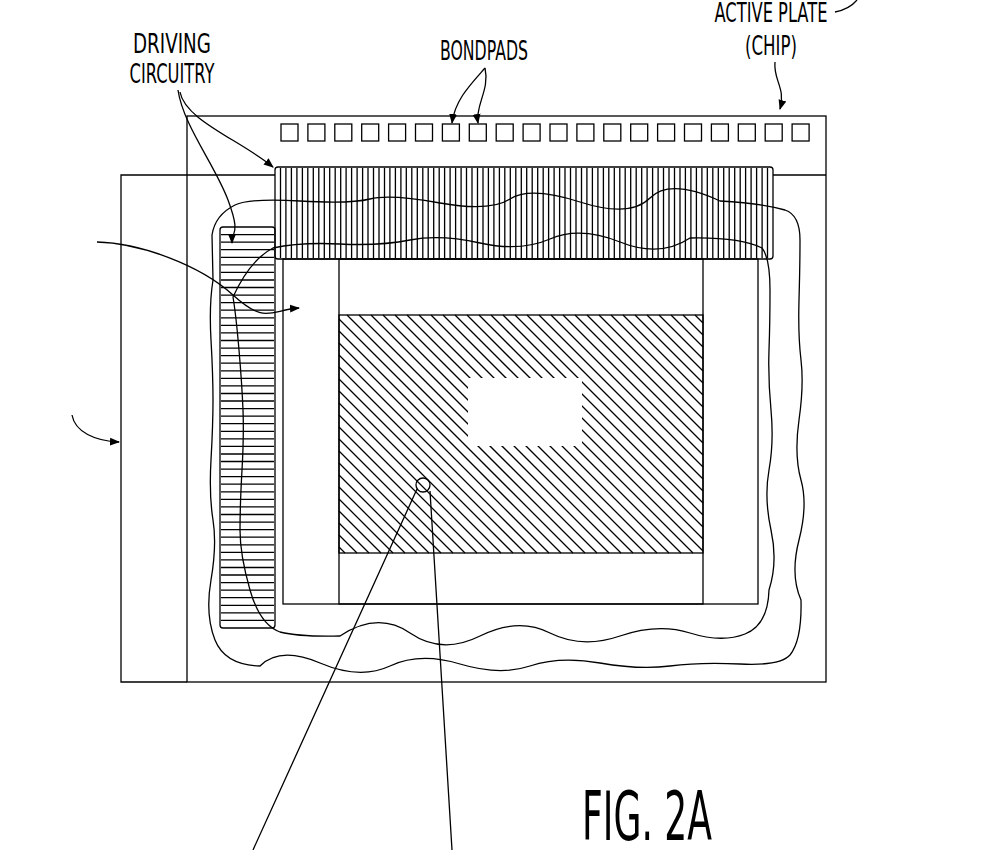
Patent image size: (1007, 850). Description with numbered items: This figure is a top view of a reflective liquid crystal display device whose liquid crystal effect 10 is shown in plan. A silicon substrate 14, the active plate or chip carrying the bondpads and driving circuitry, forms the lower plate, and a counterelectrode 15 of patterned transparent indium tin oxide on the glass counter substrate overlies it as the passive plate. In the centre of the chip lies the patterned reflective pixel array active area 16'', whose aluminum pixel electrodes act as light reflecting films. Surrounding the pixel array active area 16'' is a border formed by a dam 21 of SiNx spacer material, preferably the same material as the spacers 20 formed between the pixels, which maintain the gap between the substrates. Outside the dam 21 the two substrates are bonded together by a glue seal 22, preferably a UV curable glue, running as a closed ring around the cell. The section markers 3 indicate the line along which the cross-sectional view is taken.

The liquid crystal effect 10 is at (757, 714).
The silicon substrate 14 is at (812, 543).
The counterelectrode 15 is at (135, 472).
The pixel array active area 16'' is at (521, 533).
The spacers 20 is at (283, 664).
The dam 21 is at (75, 192).
The glue seal 22 is at (576, 653).
The section line 3- 3 is at (780, 405).